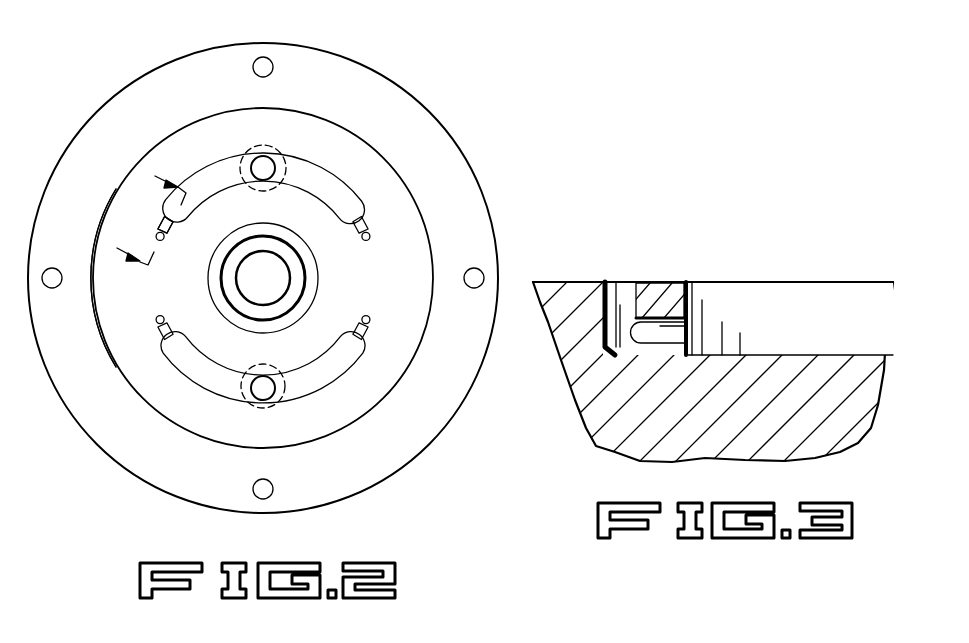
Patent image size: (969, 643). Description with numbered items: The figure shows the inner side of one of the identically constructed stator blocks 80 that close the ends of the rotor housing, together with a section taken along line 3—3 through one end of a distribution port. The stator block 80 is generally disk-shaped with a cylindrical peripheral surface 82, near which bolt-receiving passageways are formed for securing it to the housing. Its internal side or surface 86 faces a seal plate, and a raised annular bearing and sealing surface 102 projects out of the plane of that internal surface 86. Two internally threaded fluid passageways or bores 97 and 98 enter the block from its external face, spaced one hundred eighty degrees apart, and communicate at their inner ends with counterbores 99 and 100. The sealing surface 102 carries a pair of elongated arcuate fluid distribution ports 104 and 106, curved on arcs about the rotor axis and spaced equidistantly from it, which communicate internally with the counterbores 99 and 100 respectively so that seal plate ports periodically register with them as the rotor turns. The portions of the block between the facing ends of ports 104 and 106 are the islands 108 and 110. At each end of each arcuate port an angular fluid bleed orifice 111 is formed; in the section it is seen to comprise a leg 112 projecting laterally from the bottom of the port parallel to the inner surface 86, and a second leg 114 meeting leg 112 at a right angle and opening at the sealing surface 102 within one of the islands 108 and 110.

In FIG. 2, the section line 3— 3 is at (144, 214).
In FIG. 2, the stator block 80 is at (428, 103).
In FIG. 3, the stator block 80 is at (722, 432).
In FIG. 2, the peripheral surface 82 is at (379, 75).
In FIG. 2, the internal side or surface 86 is at (398, 452).
In FIG. 2, the fluid passageway or bore 97 is at (270, 146).
In FIG. 2, the fluid passageway or bore 98 is at (276, 408).
In FIG. 2, the counterbore 99 is at (262, 178).
In FIG. 2, the counterbore 100 is at (262, 400).
In FIG. 2, the annular bearing and sealing surface 102 is at (415, 262).
In FIG. 3, the annular bearing and sealing surface 102 is at (586, 224).
In FIG. 2, the arcuate fluid distribution port 104 is at (347, 194).
In FIG. 3, the arcuate fluid distribution port 104 is at (762, 300).
In FIG. 2, the arcuate fluid distribution port 106 is at (333, 372).
In FIG. 2, the island 108 is at (150, 276).
In FIG. 3, the island 108 is at (560, 282).
In FIG. 2, the island 110 is at (370, 284).
In FIG. 2, the angular fluid bleed orifice 111 is at (152, 230).
In FIG. 3, the angular fluid bleed orifice 111 is at (592, 352).
In FIG. 2, the leg 112 is at (174, 322).
In FIG. 3, the leg 112 is at (668, 342).
In FIG. 2, the second leg 114 is at (165, 318).
In FIG. 3, the second leg 114 is at (617, 282).